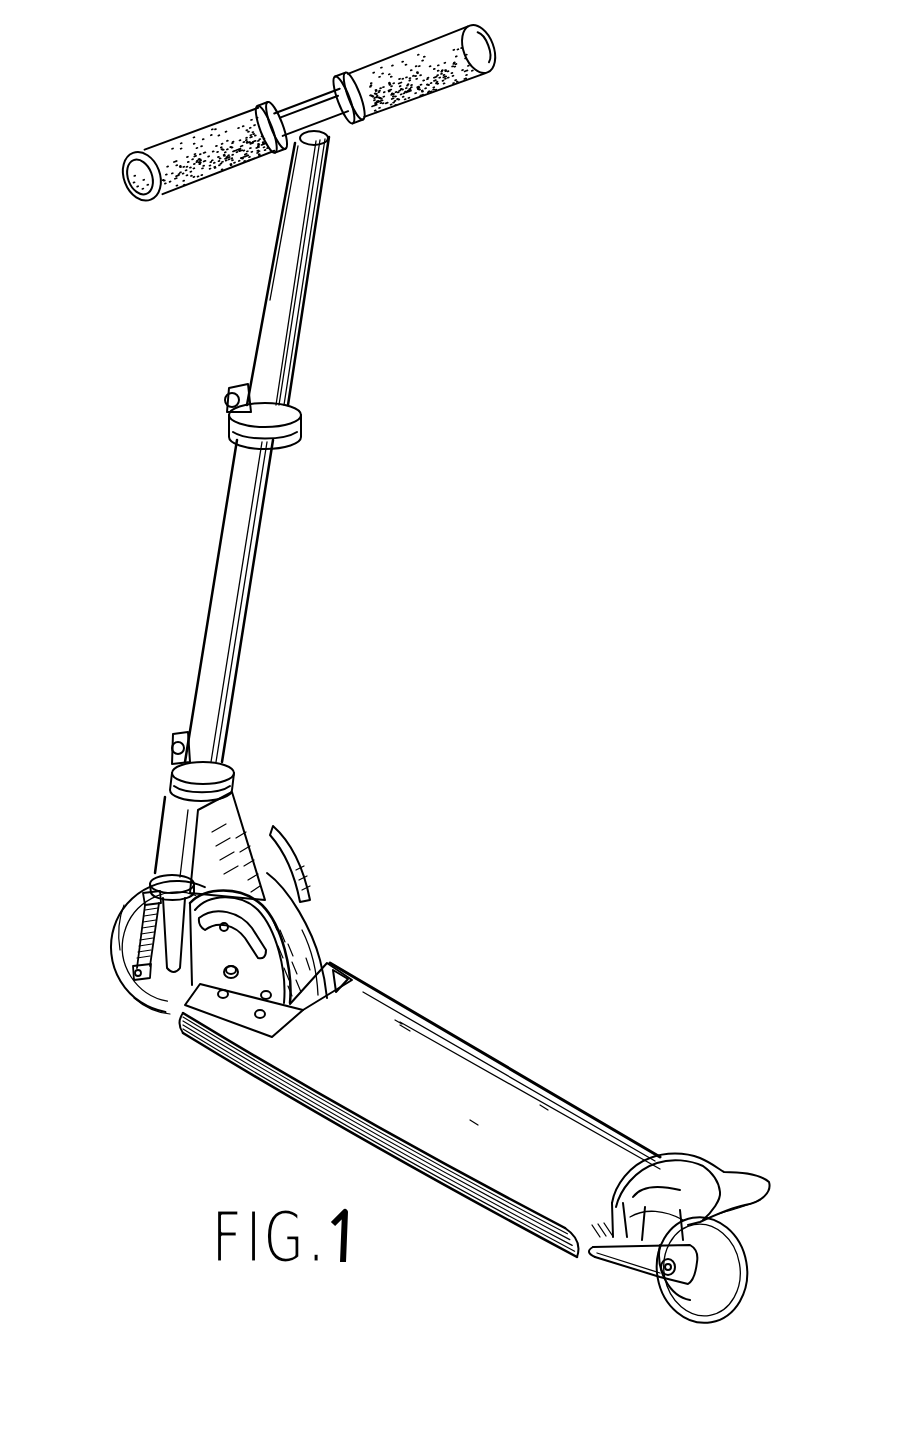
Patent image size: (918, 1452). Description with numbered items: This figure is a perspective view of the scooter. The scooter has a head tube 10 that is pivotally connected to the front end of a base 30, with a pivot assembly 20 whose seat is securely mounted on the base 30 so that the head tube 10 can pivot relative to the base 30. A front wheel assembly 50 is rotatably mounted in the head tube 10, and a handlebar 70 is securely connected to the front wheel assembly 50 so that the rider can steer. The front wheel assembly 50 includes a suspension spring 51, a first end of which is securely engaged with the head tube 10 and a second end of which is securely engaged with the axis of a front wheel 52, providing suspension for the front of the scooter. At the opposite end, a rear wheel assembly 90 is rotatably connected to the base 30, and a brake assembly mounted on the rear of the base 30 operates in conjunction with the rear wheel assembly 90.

The head tube 10 is at (166, 829).
The pivot assembly 20 is at (346, 929).
The base 30 is at (495, 1088).
The front wheel assembly 50 is at (128, 1008).
The suspension spring 51 is at (114, 903).
The front wheel 52 is at (118, 946).
The handlebar 70 is at (260, 570).
The rear wheel assembly 90 is at (730, 1152).